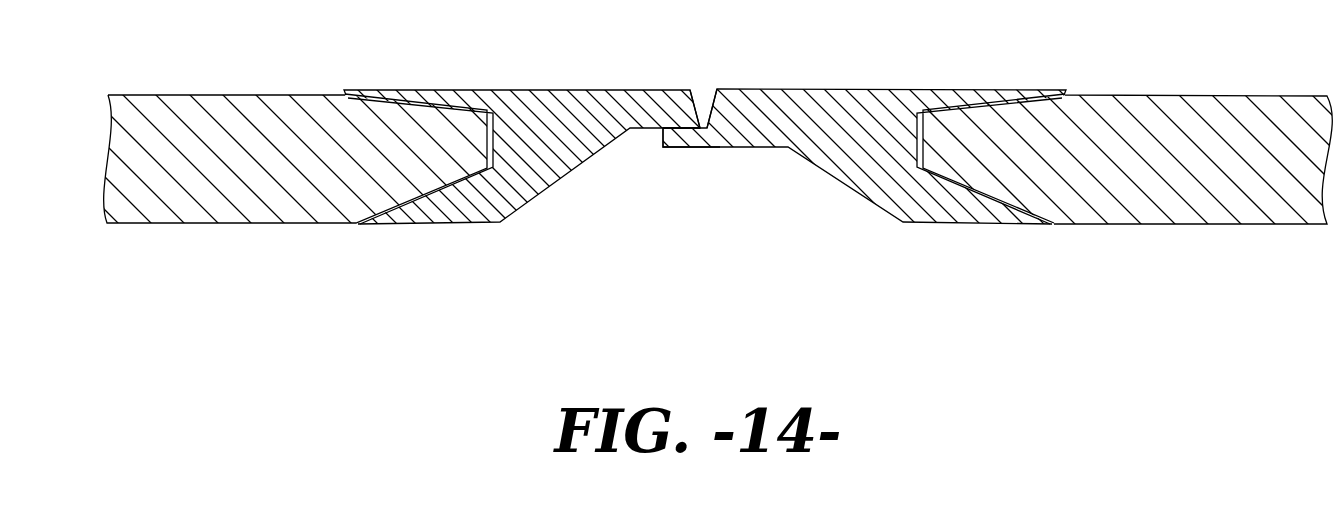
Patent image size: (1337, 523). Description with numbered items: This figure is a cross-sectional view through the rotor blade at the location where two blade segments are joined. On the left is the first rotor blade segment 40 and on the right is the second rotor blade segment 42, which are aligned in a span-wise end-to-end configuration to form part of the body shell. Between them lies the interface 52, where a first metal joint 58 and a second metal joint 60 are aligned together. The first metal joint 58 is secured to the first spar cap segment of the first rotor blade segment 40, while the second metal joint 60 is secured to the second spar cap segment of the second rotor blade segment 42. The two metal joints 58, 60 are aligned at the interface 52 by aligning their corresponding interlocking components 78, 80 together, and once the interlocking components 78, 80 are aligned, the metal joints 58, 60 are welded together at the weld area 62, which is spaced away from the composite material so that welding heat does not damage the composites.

The first rotor blade segment 40 is at (213, 92).
The second rotor blade segment 42 is at (1173, 93).
The interface 52 is at (698, 181).
The first metal joint 58 is at (542, 87).
The second metal joint 60 is at (838, 86).
The weld area 62 is at (701, 102).
The interlocking component 78 is at (680, 112).
The interlocking component 80 is at (706, 172).